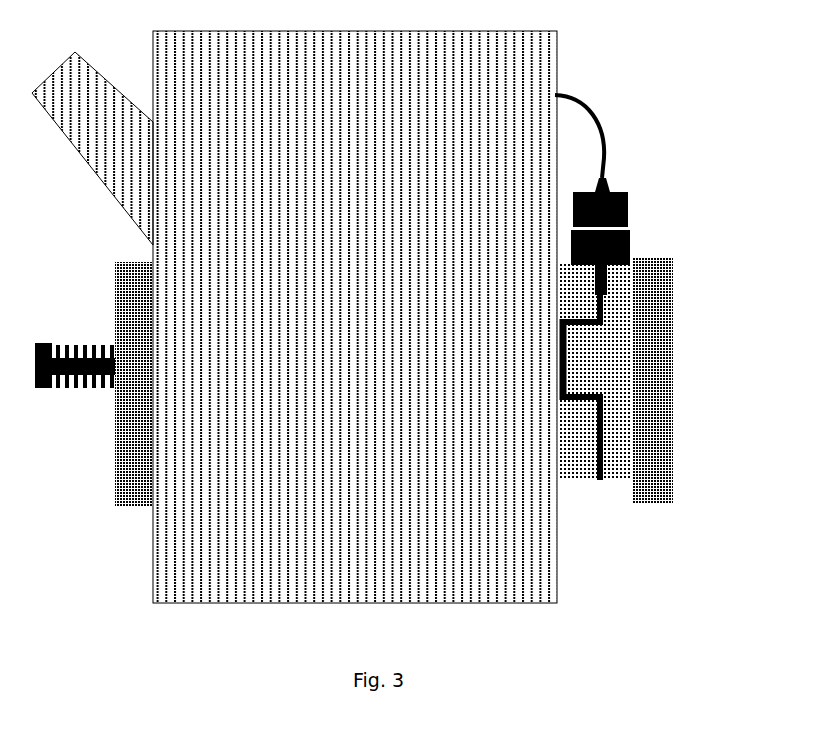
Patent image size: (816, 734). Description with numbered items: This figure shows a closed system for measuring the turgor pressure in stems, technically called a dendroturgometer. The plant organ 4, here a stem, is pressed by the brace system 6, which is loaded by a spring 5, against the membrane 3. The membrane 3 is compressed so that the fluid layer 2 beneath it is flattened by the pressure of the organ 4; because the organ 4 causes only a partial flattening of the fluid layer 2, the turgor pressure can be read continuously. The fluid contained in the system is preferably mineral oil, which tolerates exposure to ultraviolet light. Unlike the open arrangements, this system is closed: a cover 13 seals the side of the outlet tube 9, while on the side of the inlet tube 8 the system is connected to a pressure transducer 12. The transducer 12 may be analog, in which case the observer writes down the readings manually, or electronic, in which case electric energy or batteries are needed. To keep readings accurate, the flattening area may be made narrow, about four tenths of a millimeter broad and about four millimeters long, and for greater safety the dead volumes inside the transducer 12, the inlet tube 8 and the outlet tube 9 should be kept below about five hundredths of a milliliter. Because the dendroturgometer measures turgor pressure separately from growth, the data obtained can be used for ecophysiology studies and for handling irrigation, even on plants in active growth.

The fluid layer 2 is at (573, 362).
The membrane 3 is at (594, 429).
The organ 4 is at (564, 59).
The spring 5 is at (75, 408).
The brace system 6 is at (393, 411).
The inlet tube 8 is at (608, 310).
The outlet tube 9 is at (608, 413).
The pressure transducer 12 is at (638, 247).
The cover 13 is at (600, 486).